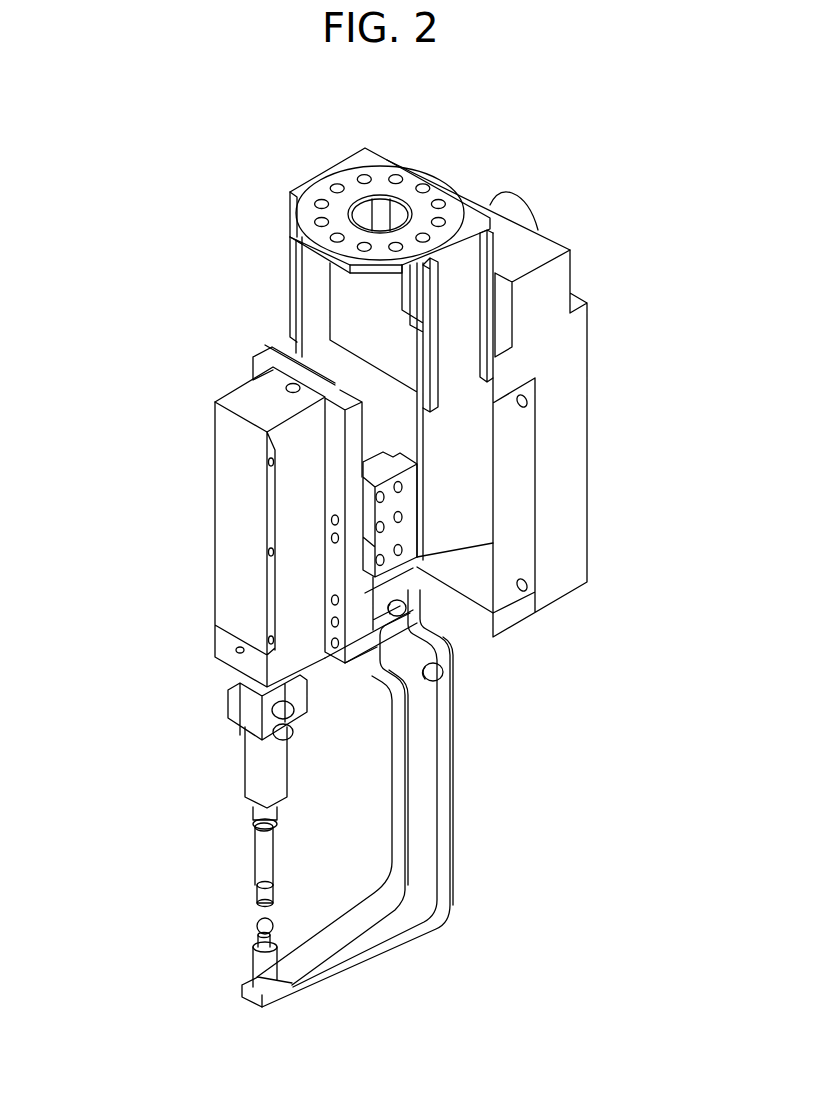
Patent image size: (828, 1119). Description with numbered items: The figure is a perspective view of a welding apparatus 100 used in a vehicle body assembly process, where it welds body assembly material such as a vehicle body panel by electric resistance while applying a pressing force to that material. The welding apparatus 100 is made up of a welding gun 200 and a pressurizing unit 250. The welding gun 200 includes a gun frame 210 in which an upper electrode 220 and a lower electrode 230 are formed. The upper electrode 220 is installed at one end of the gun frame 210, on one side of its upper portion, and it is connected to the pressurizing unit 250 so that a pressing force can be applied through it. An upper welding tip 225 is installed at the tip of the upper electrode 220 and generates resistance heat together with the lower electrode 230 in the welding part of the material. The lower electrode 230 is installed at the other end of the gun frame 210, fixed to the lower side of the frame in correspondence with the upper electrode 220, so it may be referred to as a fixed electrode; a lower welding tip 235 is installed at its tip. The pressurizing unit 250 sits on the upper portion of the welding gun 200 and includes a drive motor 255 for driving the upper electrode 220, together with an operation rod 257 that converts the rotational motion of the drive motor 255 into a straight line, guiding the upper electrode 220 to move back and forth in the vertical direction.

The welding apparatus 100 is at (156, 124).
The welding gun 200 is at (468, 856).
The gun frame 210 is at (423, 782).
The upper electrode 220 is at (263, 850).
The upper welding tip 225 is at (260, 897).
The lower electrode 230 is at (263, 965).
The lower welding tip 235 is at (257, 924).
The pressurizing unit 250 is at (168, 577).
The drive motor 255 is at (480, 459).
The operation rod 257 is at (243, 515).